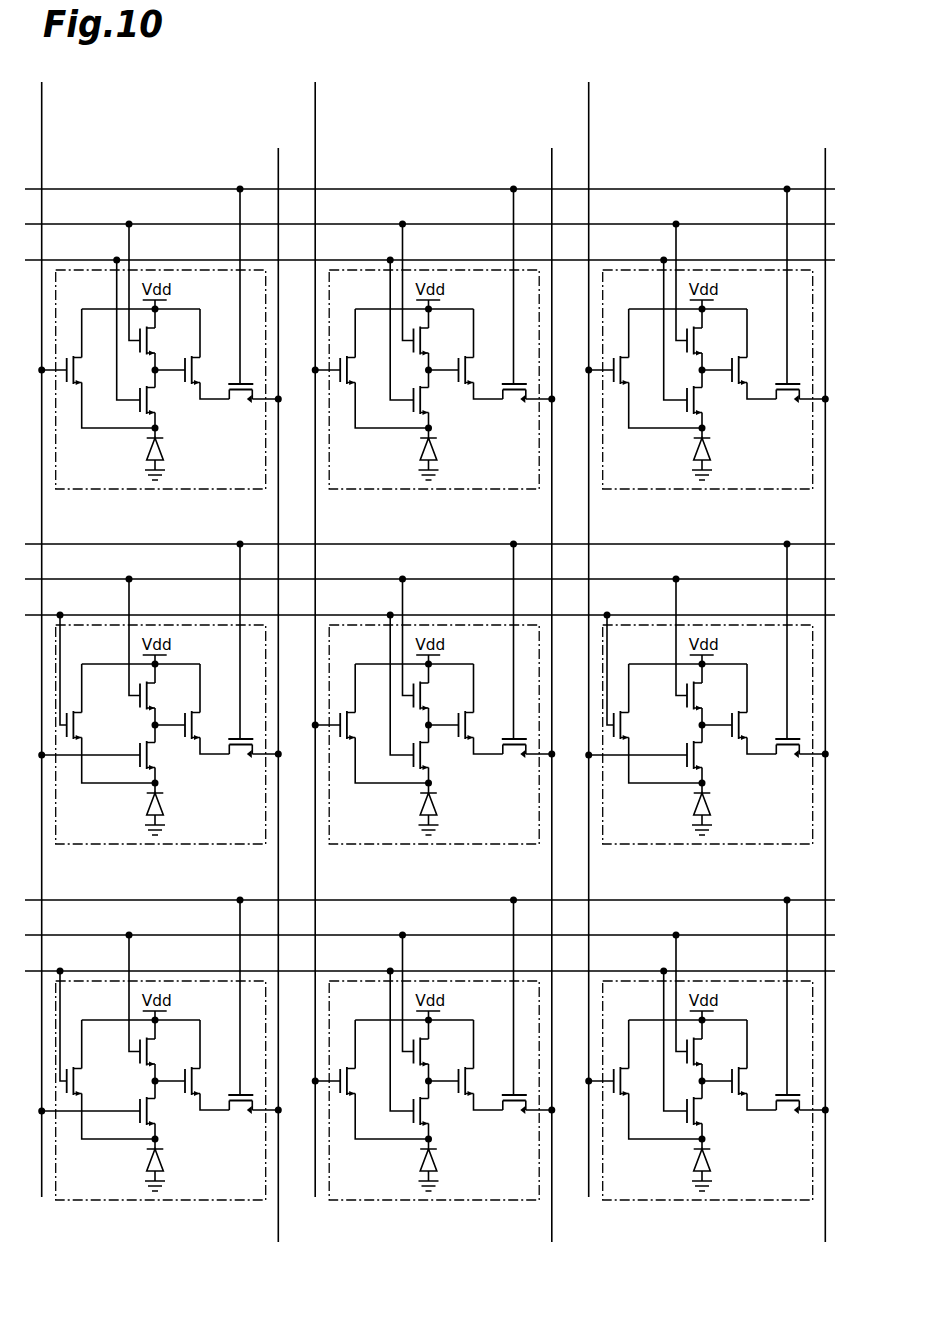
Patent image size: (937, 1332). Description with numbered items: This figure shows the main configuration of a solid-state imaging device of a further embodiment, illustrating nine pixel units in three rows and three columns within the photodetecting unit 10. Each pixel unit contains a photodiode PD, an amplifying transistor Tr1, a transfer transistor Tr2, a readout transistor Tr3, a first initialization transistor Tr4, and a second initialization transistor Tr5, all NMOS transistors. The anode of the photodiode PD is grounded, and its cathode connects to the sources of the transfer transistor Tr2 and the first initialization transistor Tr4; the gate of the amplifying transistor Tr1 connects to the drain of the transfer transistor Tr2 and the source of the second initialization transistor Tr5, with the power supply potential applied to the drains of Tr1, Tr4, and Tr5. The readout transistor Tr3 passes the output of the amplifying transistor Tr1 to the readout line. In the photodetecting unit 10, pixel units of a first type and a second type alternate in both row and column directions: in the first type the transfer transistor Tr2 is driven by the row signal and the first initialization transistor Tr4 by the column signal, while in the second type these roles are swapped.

The photodetecting unit 10 is at (746, 114).
The amplifying transistor Tr1 is at (480, 726).
The transfer transistor Tr2 is at (435, 757).
The readout transistor Tr3 is at (514, 759).
The first initialization transistor Tr4 is at (361, 726).
The second initialization transistor Tr5 is at (435, 698).
The photodiode PD is at (442, 814).